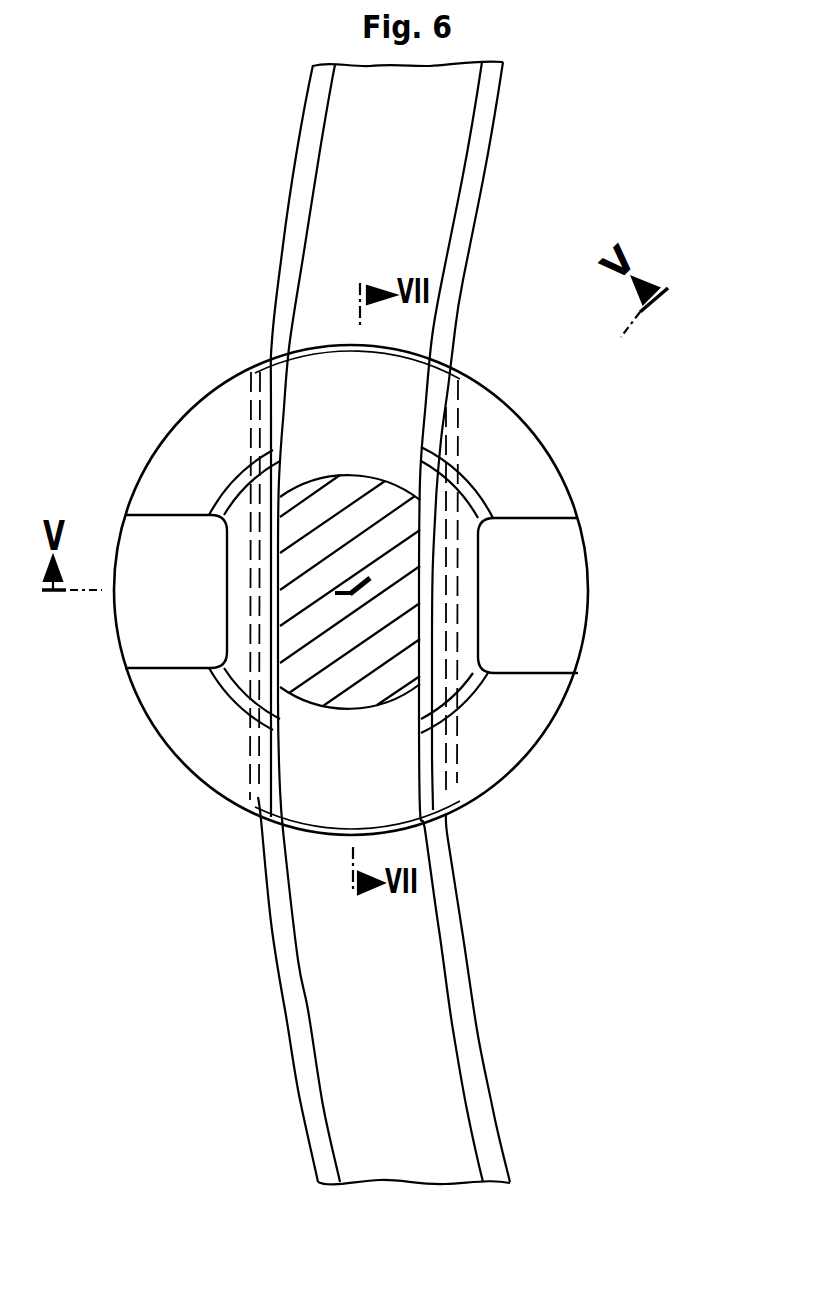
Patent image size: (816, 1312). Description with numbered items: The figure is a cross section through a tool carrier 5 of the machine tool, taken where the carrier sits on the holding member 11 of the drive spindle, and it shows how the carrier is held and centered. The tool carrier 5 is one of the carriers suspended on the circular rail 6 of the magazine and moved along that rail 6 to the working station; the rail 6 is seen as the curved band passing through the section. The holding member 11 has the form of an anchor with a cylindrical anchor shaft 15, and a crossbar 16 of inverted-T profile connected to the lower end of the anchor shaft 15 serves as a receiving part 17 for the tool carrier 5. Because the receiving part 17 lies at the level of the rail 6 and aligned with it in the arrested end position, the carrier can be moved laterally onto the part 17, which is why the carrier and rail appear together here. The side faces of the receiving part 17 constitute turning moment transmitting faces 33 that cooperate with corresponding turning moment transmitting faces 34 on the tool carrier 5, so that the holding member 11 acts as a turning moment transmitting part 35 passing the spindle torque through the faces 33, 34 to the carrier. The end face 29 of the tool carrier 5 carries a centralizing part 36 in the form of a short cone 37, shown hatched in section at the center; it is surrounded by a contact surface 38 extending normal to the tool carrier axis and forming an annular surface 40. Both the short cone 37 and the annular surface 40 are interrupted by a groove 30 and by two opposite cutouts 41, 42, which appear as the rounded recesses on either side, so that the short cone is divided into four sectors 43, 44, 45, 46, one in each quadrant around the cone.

The tool carrier 5 is at (503, 754).
The circular rail 6 is at (475, 155).
The holding member 11 is at (365, 480).
The anchor shaft 15 is at (312, 660).
The crossbar 16 is at (400, 407).
The receiving part 17 is at (412, 786).
The end face 29 is at (192, 461).
The groove 30 is at (232, 672).
The turning moment transmitting faces 33 is at (264, 406).
The turning moment transmitting faces 34 is at (252, 492).
The turning moment transmitting part 35 is at (328, 362).
The centralizing part 36 is at (503, 487).
The short cone 37 is at (485, 680).
The contact surface 38 is at (483, 755).
The annular surface 40 is at (240, 768).
The cutout 41 is at (155, 612).
The cutout 42 is at (567, 603).
The sector 43 is at (250, 462).
The sector 44 is at (472, 478).
The sector 45 is at (487, 682).
The sector 46 is at (237, 680).